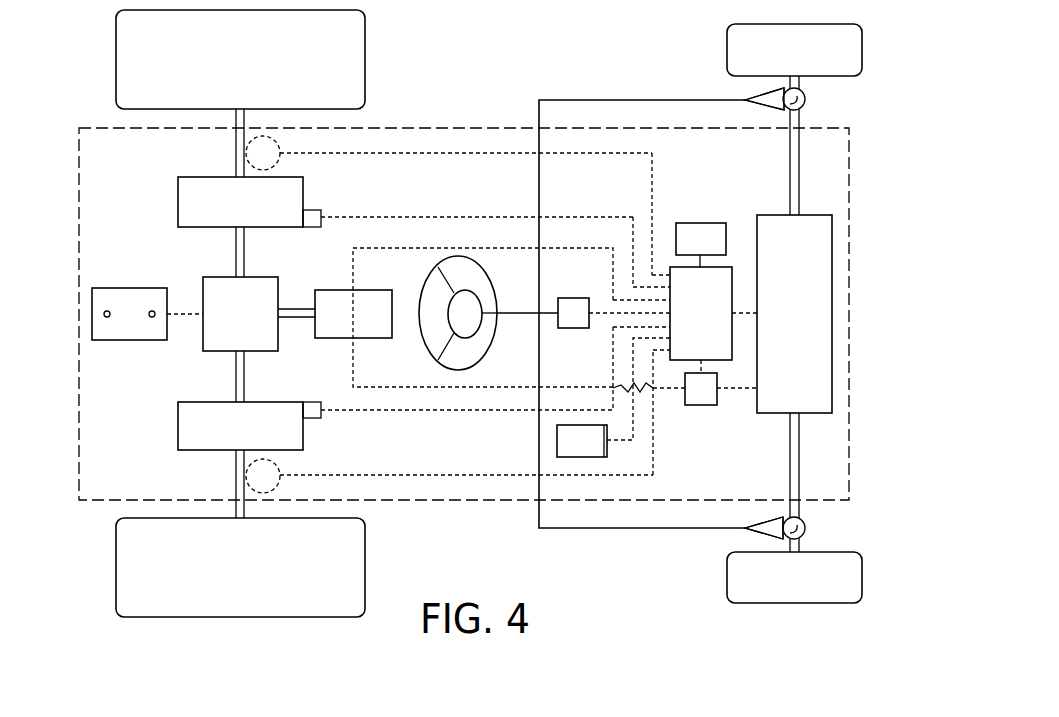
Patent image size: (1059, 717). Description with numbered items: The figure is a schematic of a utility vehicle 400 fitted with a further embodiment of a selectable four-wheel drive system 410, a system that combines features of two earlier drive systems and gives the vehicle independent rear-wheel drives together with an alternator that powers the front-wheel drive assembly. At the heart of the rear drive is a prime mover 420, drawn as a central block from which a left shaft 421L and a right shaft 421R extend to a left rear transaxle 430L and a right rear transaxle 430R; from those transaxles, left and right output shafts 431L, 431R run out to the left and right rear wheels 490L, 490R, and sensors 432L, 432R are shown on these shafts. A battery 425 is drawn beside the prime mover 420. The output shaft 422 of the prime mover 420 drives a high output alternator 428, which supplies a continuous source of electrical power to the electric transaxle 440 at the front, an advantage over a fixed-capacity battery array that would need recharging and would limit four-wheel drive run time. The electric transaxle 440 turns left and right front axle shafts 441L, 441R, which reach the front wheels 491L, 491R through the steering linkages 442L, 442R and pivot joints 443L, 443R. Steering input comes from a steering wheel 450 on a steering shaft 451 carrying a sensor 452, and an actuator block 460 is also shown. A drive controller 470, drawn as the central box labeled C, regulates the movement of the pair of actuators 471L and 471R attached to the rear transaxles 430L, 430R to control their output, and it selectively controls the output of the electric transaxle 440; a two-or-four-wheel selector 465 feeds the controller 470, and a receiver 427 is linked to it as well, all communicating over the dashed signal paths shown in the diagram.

The utility vehicle 400 is at (452, 88).
The selectable four-wheel drive system 410 is at (140, 166).
The prime mover 420 is at (203, 287).
The left drive shaft 421L is at (236, 253).
The right drive shaft 421R is at (236, 376).
The output shaft 422 is at (295, 308).
The battery 425 is at (92, 313).
The receiver 427 is at (702, 407).
The high output alternator 428 is at (327, 339).
The rear transaxle 430L is at (178, 200).
The rear transaxle 430R is at (178, 423).
The left output shaft 431L is at (236, 143).
The right output shaft 431R is at (236, 468).
The left speed sensor 432L is at (278, 163).
The right speed sensor 432R is at (278, 465).
The electric transaxle 440 is at (832, 327).
The left front axle shaft 441L is at (799, 182).
The right front axle shaft 441R is at (800, 447).
The left steering linkage 442L is at (803, 106).
The right steering linkage 442R is at (802, 547).
The left pivot joint 443L is at (799, 83).
The right pivot joint 443R is at (797, 523).
The steering wheel assembly 450 is at (431, 276).
The steering shaft 451 is at (520, 311).
The position sensor 452 is at (573, 329).
The actuator 460 is at (557, 440).
The two/four wheel drive selector 465 is at (700, 223).
The drive controller 470 is at (668, 267).
The actuator 471L is at (321, 210).
The actuator 471R is at (321, 418).
The left rear wheel 490L is at (270, 70).
The right rear wheel 490R is at (272, 579).
The left front wheel 491L is at (825, 62).
The right front wheel 491R is at (825, 589).